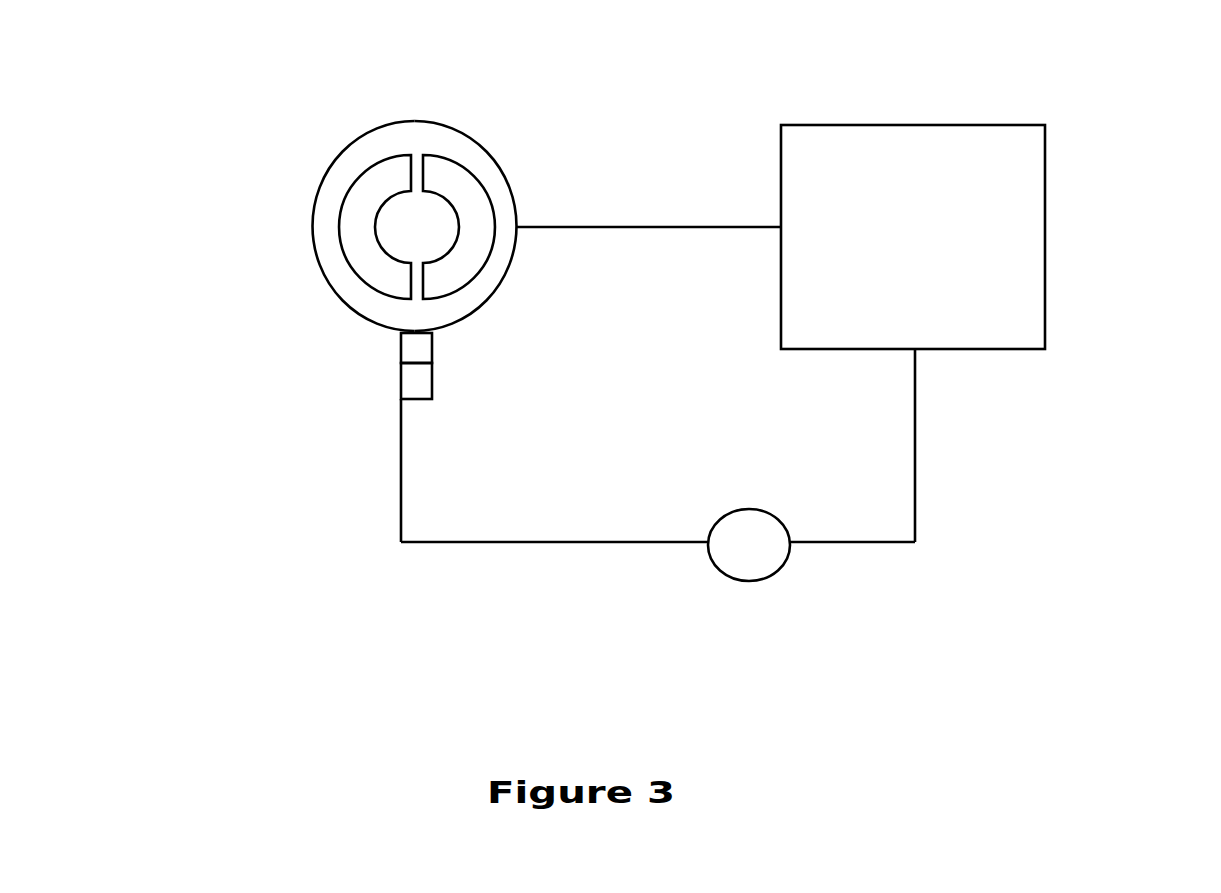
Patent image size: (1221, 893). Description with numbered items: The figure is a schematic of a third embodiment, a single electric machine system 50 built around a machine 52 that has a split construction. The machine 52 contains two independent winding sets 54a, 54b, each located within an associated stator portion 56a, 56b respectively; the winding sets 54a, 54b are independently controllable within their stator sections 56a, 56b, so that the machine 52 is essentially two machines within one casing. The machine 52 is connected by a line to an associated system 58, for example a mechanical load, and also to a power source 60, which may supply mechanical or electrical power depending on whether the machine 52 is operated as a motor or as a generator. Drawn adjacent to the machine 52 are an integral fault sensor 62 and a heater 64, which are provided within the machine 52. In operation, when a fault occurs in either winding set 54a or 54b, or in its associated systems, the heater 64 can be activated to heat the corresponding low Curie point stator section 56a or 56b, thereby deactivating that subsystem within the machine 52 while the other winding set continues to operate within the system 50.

The single electric machine system 50 is at (306, 582).
The machine 52 is at (379, 195).
The winding set 54a is at (373, 188).
The winding set 54b is at (468, 183).
The stator portion 56a is at (372, 129).
The stator portion 56b is at (457, 128).
The associated system 58 is at (1045, 208).
The power source 60 is at (778, 570).
The fault sensor 62 is at (415, 387).
The heater 64 is at (413, 347).